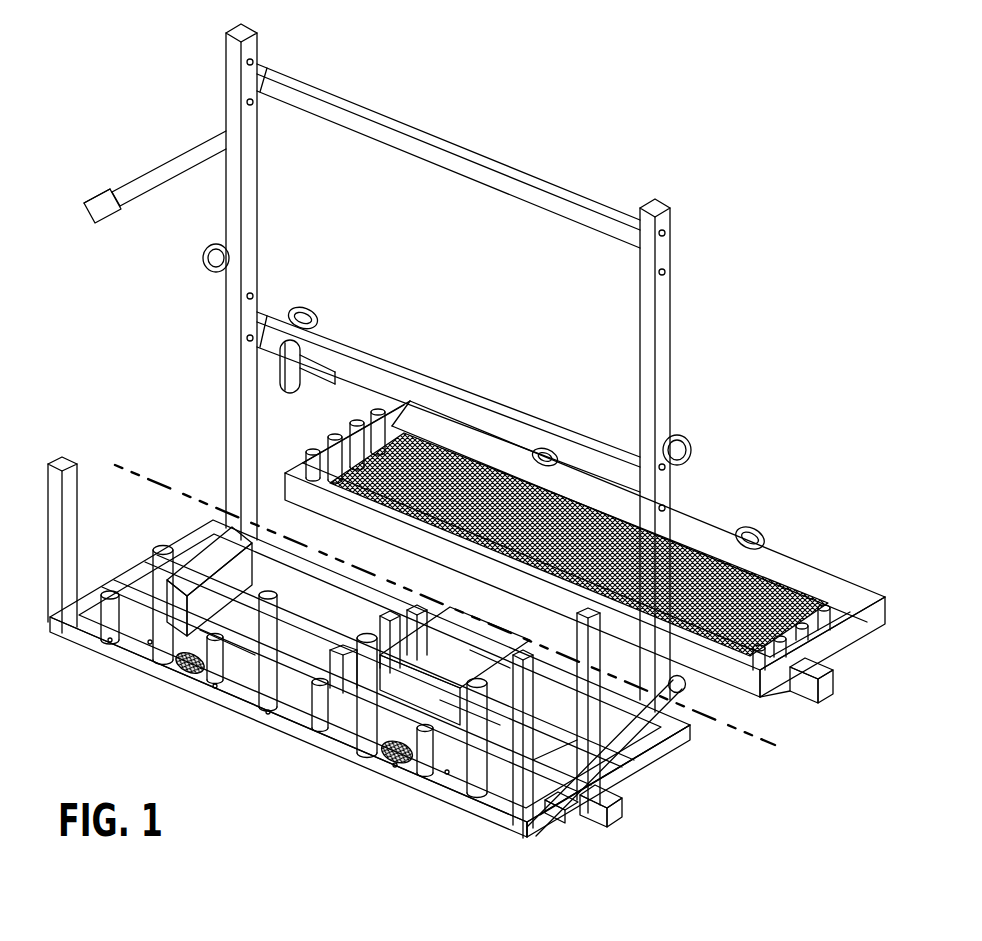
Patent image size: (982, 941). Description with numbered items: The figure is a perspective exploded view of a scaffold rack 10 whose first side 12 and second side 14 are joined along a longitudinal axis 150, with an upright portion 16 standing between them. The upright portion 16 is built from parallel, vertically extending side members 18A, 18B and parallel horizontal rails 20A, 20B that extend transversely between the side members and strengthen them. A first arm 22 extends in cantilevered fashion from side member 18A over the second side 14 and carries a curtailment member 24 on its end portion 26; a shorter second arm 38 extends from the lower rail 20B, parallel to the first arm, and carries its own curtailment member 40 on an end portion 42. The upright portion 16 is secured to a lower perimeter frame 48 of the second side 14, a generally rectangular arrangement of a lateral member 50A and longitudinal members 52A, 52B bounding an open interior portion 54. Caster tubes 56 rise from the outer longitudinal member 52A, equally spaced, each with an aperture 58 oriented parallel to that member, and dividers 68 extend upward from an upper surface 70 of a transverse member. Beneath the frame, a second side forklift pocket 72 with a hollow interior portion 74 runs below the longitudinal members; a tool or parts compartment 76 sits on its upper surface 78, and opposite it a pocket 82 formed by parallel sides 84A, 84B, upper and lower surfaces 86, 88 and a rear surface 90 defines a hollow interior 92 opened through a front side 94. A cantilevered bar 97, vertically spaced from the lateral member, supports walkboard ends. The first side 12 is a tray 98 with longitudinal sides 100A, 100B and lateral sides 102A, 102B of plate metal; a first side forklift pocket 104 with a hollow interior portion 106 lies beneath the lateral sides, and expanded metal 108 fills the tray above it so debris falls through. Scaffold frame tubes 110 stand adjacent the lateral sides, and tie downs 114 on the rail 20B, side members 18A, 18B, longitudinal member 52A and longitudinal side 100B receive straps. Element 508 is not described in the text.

The scaffold rack 10 is at (470, 98).
The first side 12 is at (762, 470).
The second side 14 is at (352, 773).
The upright portion 16 is at (577, 190).
The side member 18A is at (240, 74).
The side member 18B is at (672, 305).
The rail 20A is at (326, 100).
The rail 20B is at (397, 368).
The first arm 22 is at (166, 160).
The curtailment member 24 is at (88, 206).
The end portion 26 is at (118, 170).
The second arm 38 is at (330, 360).
The curtailment member 40 is at (278, 366).
The end portion 42 is at (343, 373).
The lower perimeter frame 48 is at (466, 807).
The lateral member 50A is at (83, 597).
The outer longitudinal member 52A is at (153, 673).
The longitudinal member 52B is at (382, 594).
The open interior portion 54 is at (348, 597).
The caster tube 56 is at (447, 772).
The aperture 58 is at (171, 573).
The divider 68 is at (417, 613).
The upper surface 70 is at (346, 772).
The second side forklift pocket 72 is at (573, 822).
The hollow interior portion 74 is at (610, 813).
The tool or parts compartment 76 is at (143, 560).
The upper surface 78 is at (231, 637).
The pocket 82 is at (556, 745).
The side 84A is at (508, 790).
The side 84B is at (563, 683).
The upper surface 86 is at (628, 762).
The lower surface 88 is at (430, 746).
The rear surface 90 is at (527, 835).
The hollow interior 92 is at (493, 707).
The front side 94 is at (500, 693).
The cantilevered bar 97 is at (680, 700).
The tray 98 is at (845, 592).
The longitudinal side 100A is at (703, 533).
The longitudinal side 100B is at (738, 682).
The lateral side 102A is at (883, 613).
The lateral side 102B is at (298, 462).
The first side forklift pocket 104 is at (790, 697).
The hollow interior portion 106 is at (820, 690).
The expanded metal 108 is at (785, 598).
The scaffold frame tube 110 is at (334, 440).
The tie down 114 is at (203, 258).
The longitudinal axis 150 is at (766, 752).
The side bar 508 is at (633, 772).